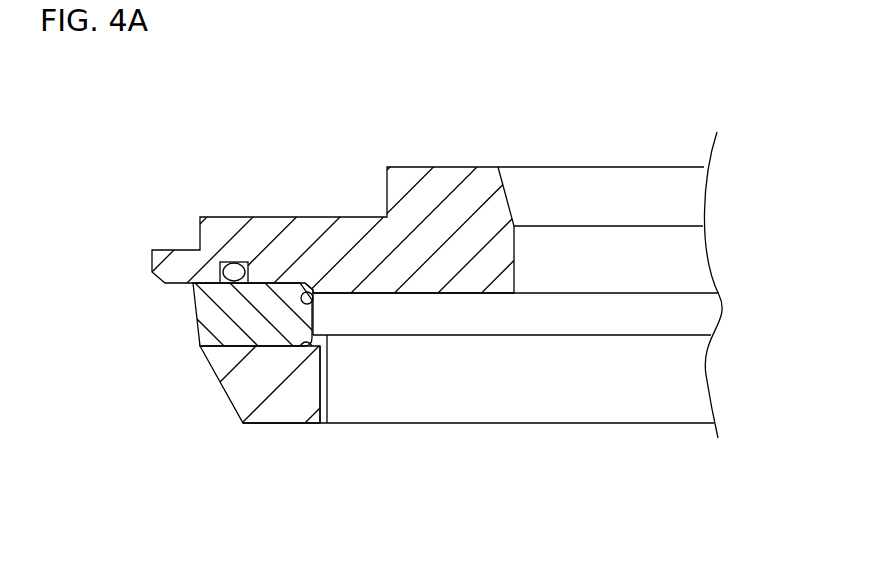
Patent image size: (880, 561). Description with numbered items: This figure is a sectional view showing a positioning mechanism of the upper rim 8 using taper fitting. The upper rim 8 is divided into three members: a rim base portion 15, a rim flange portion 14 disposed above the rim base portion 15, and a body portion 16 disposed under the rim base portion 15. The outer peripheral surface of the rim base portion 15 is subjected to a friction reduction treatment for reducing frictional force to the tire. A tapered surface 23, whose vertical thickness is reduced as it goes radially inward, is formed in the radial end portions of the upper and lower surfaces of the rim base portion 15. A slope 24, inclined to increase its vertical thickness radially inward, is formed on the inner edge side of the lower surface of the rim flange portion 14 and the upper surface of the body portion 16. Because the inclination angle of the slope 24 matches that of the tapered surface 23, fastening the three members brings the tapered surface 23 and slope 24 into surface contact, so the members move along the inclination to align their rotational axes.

The upper rim 8 is at (246, 182).
The rim flange portion 14 is at (232, 214).
The rim base portion 15 is at (212, 311).
The body portion 16 is at (237, 392).
The tapered surface 23 is at (307, 290).
The slope 24 is at (316, 302).